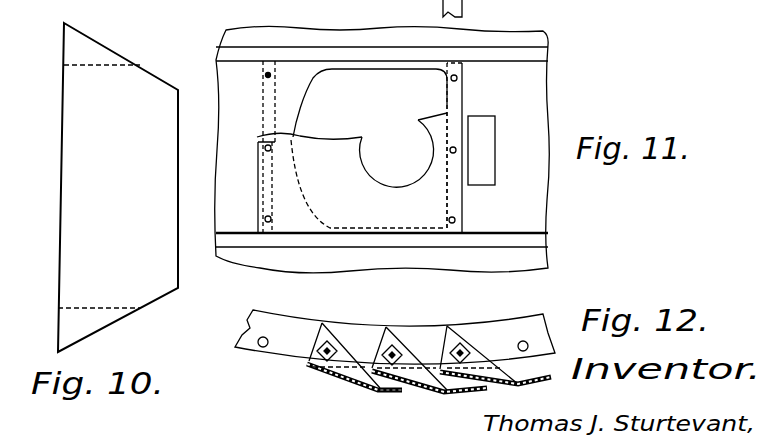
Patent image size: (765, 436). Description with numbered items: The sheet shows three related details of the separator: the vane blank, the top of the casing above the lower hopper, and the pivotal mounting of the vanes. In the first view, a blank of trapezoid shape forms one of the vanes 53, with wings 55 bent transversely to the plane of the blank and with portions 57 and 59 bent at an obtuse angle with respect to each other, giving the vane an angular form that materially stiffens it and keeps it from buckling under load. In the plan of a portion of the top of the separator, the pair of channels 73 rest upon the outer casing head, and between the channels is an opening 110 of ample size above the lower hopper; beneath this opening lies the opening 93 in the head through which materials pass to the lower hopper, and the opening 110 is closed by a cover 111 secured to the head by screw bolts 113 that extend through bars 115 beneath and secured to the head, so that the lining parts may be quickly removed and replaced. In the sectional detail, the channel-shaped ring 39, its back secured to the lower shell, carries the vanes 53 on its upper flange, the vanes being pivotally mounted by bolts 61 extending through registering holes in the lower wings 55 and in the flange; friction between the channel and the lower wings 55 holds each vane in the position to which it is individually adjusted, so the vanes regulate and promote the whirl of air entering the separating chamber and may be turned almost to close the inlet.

In FIG. 10, the vanes 53 is at (78, 170).
In FIG. 12, the vanes 53 is at (374, 397).
In FIG. 10, the wings 55 is at (94, 54).
In FIG. 12, the wings 55 is at (325, 362).
In FIG. 11, the channels 73 is at (540, 60).
In FIG. 11, the opening 110 is at (453, 93).
In FIG. 11, the bars 115 is at (273, 118).
In FIG. 11, the cover 111 is at (347, 168).
In FIG. 11, the screw bolts 113 is at (271, 149).
In FIG. 11, the opening 93 is at (485, 153).
In FIG. 12, the channel-shaped ring 39 is at (415, 337).
In FIG. 12, the bolts 61 is at (305, 361).
In FIG. 12, the portion 59 is at (343, 377).
In FIG. 12, the portion 57 is at (404, 390).